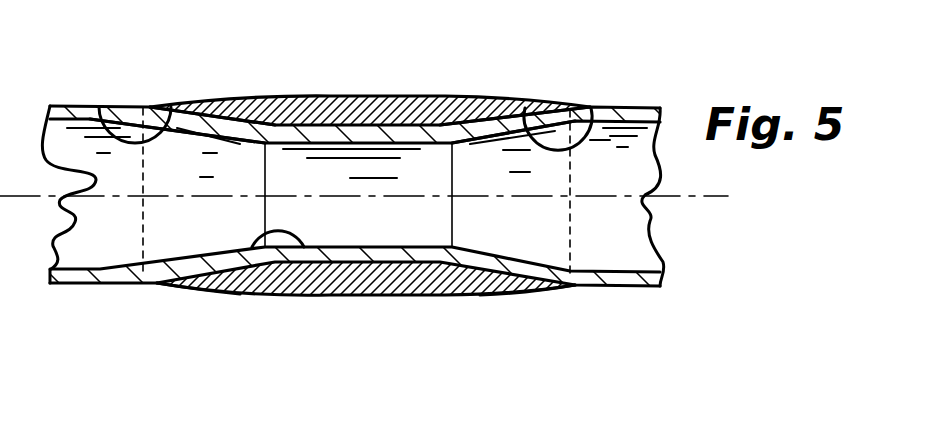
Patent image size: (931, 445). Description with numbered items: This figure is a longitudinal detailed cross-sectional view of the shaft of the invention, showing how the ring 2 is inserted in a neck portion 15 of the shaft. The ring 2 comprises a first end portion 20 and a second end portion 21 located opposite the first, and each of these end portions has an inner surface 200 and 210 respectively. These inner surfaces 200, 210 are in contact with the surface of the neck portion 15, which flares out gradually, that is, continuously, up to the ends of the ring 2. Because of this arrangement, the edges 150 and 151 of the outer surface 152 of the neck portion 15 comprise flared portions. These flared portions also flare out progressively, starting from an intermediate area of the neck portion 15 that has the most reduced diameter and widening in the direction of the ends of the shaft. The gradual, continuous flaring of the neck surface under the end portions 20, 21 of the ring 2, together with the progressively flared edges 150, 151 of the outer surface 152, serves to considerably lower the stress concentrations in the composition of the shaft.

The ring 2 is at (362, 98).
The neck portion 15 is at (290, 100).
The first end portion 20 is at (213, 100).
The second end portion 21 is at (505, 100).
The inner surface 200 is at (88, 125).
The inner surface 210 is at (584, 140).
The edge 150 is at (178, 292).
The edge 151 is at (517, 272).
The outer surface 152 is at (293, 297).